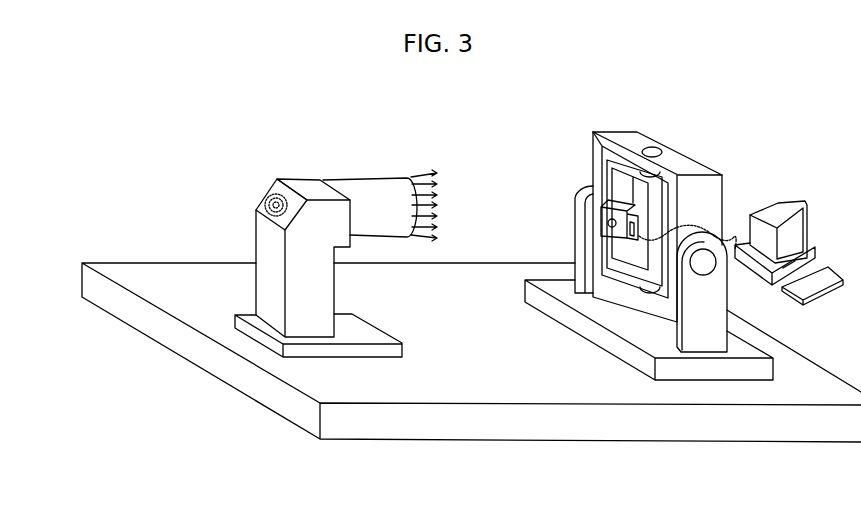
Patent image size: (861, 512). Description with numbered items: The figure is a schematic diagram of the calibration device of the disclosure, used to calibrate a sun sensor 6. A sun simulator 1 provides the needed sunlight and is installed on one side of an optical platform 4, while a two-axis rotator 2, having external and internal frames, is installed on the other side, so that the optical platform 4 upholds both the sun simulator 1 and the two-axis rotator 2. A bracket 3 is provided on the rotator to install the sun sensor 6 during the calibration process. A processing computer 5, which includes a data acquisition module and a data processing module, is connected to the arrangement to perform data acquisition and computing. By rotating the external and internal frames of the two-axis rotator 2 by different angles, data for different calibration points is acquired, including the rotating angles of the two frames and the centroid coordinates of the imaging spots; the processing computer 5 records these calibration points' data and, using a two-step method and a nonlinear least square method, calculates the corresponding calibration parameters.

The sun simulator 1 is at (367, 200).
The two-axis rotator 2 is at (710, 310).
The bracket 3 is at (625, 256).
The optical platform 4 is at (405, 420).
The processing computer 5 is at (760, 208).
The sun sensor 6 is at (608, 217).